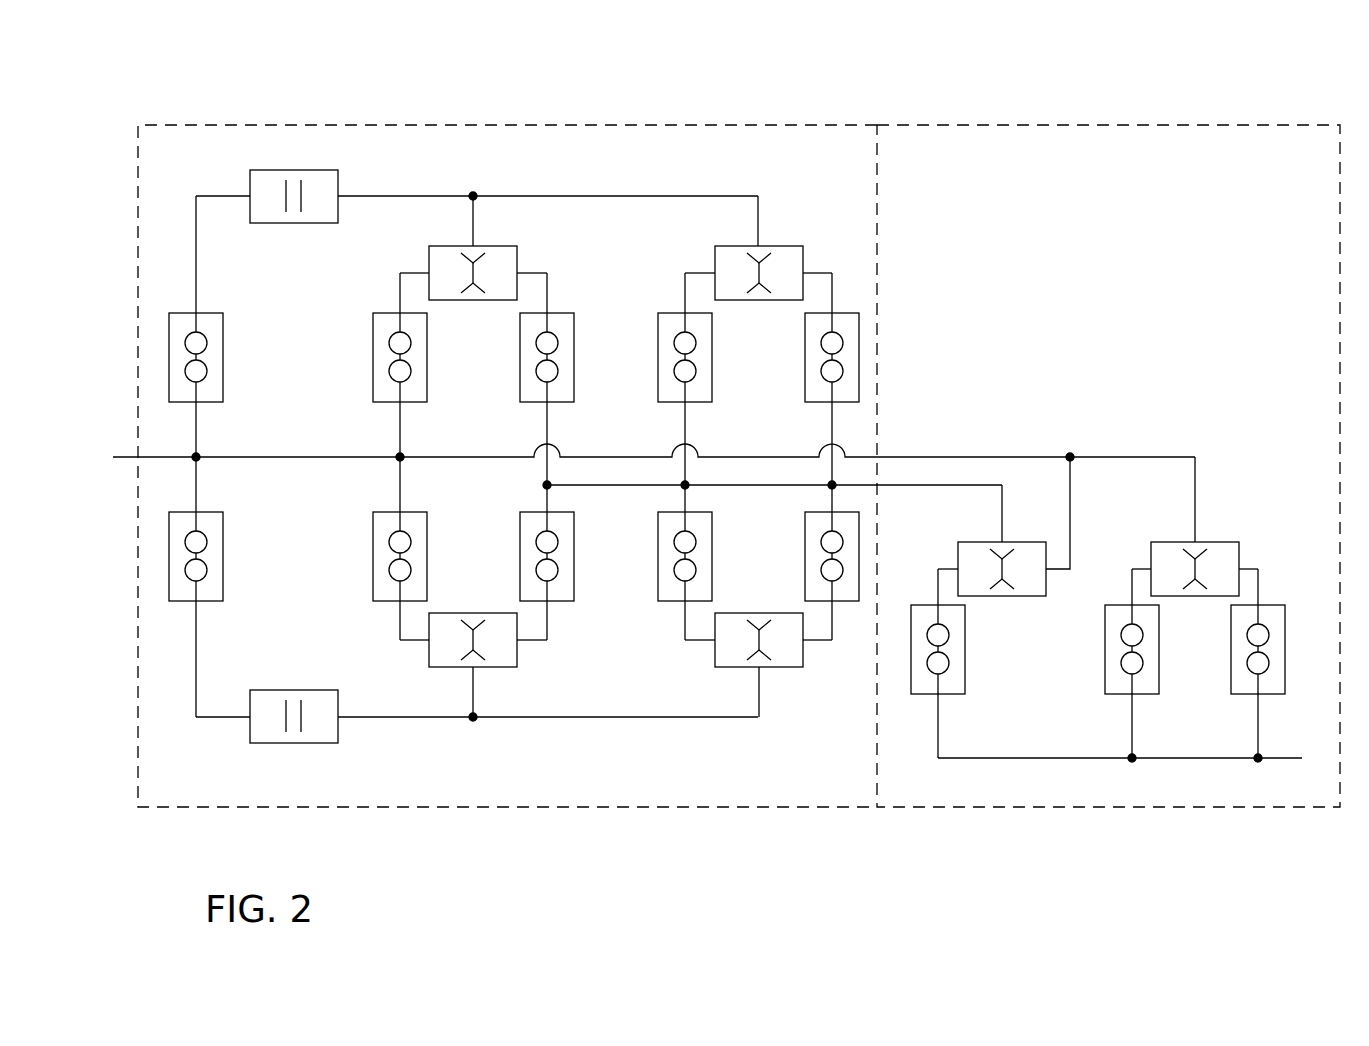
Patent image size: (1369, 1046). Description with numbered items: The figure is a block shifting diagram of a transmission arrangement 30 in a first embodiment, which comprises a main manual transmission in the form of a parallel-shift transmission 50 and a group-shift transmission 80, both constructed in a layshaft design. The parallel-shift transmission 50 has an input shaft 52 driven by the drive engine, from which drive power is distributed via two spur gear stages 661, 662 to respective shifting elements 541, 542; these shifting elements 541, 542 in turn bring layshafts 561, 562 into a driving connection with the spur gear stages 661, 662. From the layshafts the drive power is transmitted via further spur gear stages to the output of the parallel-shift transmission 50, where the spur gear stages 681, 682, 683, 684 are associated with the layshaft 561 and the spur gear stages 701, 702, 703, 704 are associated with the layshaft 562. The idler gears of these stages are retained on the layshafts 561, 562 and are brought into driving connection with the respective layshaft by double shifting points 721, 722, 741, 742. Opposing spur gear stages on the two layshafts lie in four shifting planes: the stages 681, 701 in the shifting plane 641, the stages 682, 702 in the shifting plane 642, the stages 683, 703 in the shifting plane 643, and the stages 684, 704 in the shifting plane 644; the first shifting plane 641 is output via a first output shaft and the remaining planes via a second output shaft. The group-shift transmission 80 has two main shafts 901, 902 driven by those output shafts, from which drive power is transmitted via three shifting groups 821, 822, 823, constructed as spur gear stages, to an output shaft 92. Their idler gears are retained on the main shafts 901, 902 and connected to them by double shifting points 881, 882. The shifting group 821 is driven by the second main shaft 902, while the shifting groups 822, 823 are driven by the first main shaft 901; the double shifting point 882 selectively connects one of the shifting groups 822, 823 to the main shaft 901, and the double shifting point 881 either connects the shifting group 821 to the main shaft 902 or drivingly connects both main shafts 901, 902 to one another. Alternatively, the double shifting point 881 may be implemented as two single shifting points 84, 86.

The transmission arrangement 30 is at (846, 60).
The parallel-shift transmission 50 is at (452, 123).
The group-shift transmission 80 is at (1069, 123).
The input shaft 52 is at (124, 457).
The shifting element 541 is at (250, 173).
The shifting element 542 is at (258, 745).
The layshaft 561 is at (382, 196).
The layshaft 562 is at (413, 718).
The spur gear stage 661 is at (223, 355).
The spur gear stage 662 is at (223, 570).
The spur gear stage 681 is at (373, 332).
The spur gear stage 682 is at (520, 332).
The spur gear stage 683 is at (658, 332).
The spur gear stage 684 is at (805, 332).
The spur gear stage 701 is at (373, 542).
The spur gear stage 702 is at (520, 542).
The spur gear stage 703 is at (658, 542).
The spur gear stage 704 is at (805, 542).
The double shifting point 721 is at (429, 258).
The double shifting point 722 is at (715, 258).
The double shifting point 741 is at (440, 668).
The double shifting point 742 is at (727, 668).
The shifting plane 641 is at (417, 806).
The shifting plane 642 is at (553, 806).
The shifting plane 643 is at (690, 806).
The shifting plane 644 is at (837, 806).
The main shaft 901 is at (950, 457).
The main shaft 902 is at (941, 487).
The single shifting point 84 is at (1098, 553).
The single shifting point 86 is at (1098, 553).
The double shifting point 881 is at (996, 598).
The double shifting point 882 is at (1195, 595).
The shifting group 821 is at (965, 645).
The shifting group 822 is at (1105, 677).
The shifting group 823 is at (1231, 677).
The output shaft 92 is at (1022, 759).